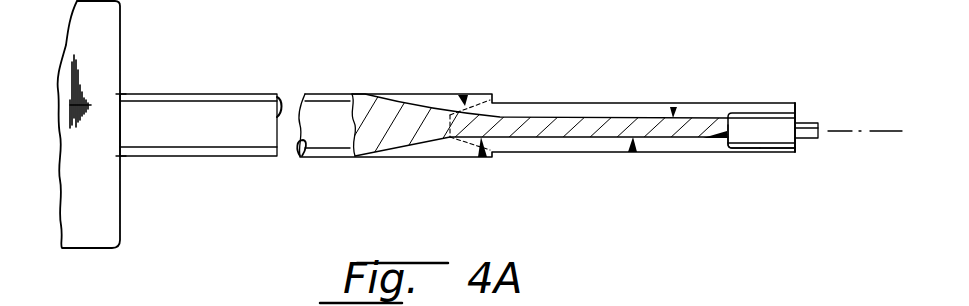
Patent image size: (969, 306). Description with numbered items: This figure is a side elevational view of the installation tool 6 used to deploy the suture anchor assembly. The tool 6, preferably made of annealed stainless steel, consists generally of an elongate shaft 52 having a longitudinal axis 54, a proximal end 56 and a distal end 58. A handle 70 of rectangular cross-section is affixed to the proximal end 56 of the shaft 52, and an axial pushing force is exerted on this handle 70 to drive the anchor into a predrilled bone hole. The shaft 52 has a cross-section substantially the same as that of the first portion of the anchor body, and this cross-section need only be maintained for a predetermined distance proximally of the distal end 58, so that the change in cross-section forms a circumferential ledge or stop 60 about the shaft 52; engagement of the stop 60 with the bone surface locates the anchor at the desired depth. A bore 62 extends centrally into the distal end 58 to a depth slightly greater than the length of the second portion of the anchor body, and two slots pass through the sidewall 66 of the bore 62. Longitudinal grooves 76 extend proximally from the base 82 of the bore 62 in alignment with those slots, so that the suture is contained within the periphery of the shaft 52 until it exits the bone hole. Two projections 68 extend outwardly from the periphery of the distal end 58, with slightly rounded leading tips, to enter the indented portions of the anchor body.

The installation tool 6 is at (250, 182).
The elongate shaft 52 is at (236, 107).
The longitudinal axis 54 is at (861, 128).
The proximal end 56 is at (122, 90).
The distal end 58 is at (797, 107).
The circumferential ledge or stop 60 is at (502, 103).
The bore 62 is at (762, 128).
The sidewall 66 is at (783, 152).
The projections 68 is at (810, 125).
The handle 70 is at (112, 27).
The grooves 76 is at (562, 110).
The base 82 is at (737, 132).